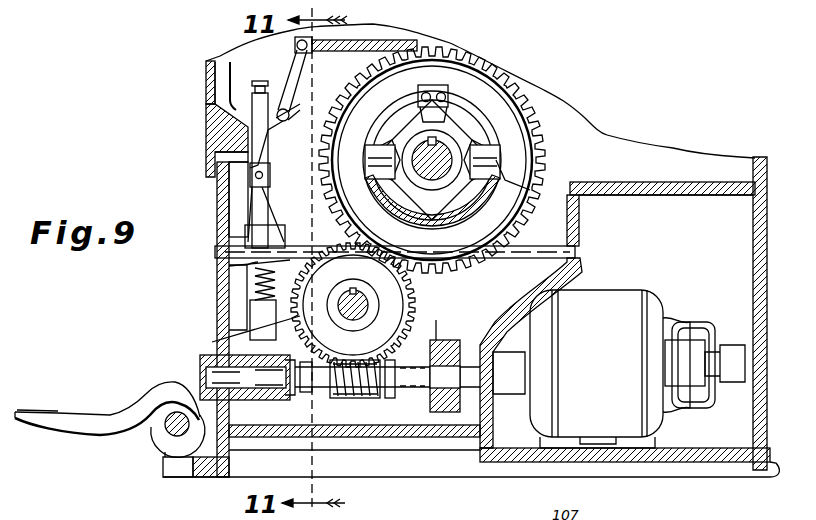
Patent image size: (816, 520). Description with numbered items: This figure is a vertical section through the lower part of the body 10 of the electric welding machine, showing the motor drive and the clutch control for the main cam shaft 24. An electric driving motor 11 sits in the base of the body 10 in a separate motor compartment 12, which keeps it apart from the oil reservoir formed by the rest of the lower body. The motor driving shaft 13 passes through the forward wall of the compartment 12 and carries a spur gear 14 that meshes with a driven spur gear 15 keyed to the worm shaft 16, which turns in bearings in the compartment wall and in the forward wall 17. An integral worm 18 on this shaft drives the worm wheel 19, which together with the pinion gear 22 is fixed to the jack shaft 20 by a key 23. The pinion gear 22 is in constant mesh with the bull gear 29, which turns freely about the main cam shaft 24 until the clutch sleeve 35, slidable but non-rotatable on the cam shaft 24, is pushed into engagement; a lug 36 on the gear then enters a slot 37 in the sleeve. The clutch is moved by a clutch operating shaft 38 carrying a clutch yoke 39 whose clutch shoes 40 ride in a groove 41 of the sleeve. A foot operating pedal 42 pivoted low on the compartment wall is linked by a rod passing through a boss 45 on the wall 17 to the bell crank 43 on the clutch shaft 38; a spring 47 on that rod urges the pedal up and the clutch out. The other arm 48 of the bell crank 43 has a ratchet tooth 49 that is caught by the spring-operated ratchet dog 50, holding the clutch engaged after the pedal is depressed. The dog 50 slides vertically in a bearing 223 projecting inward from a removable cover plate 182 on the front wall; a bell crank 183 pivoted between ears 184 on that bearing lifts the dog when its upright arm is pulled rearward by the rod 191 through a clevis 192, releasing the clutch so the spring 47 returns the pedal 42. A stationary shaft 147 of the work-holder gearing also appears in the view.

The body portion 10 is at (757, 157).
The electric driving motor 11 is at (637, 369).
The motor compartment 12 is at (666, 204).
The motor driving shaft 13 is at (486, 355).
The spur gear 14 is at (429, 321).
The driven spur gear 15 is at (450, 342).
The worm shaft 16 is at (404, 390).
The forward wall 17 is at (229, 310).
The worm 18 is at (358, 398).
The worm wheel 19 is at (212, 342).
The jack shaft 20 is at (200, 363).
The pinion gear 22 is at (258, 270).
The key 23 is at (250, 304).
The main cam shaft 24 is at (418, 150).
The bull gear 29 is at (500, 150).
The clutch sleeve 35 is at (458, 110).
The lug 36 is at (433, 85).
The slot 37 is at (442, 110).
The clutch operating shaft 38 is at (578, 252).
The clutch yoke 39 is at (500, 196).
The clutch shoes 40 is at (462, 142).
The groove 41 is at (478, 128).
The foot operating pedal 42 is at (93, 423).
The bell crank 43 is at (266, 212).
The boss 45 is at (305, 318).
The spring 47 is at (260, 262).
The arm 48 is at (236, 190).
The ratchet tooth 49 is at (270, 176).
The ratchet dog 50 is at (252, 140).
The stationary shaft 147 is at (168, 438).
The removable cover plate 182 is at (218, 123).
The bell crank 183 is at (300, 80).
The ears 184 is at (285, 124).
The rod 191 is at (385, 40).
The clevis 192 is at (296, 50).
The bearing 223 is at (230, 157).